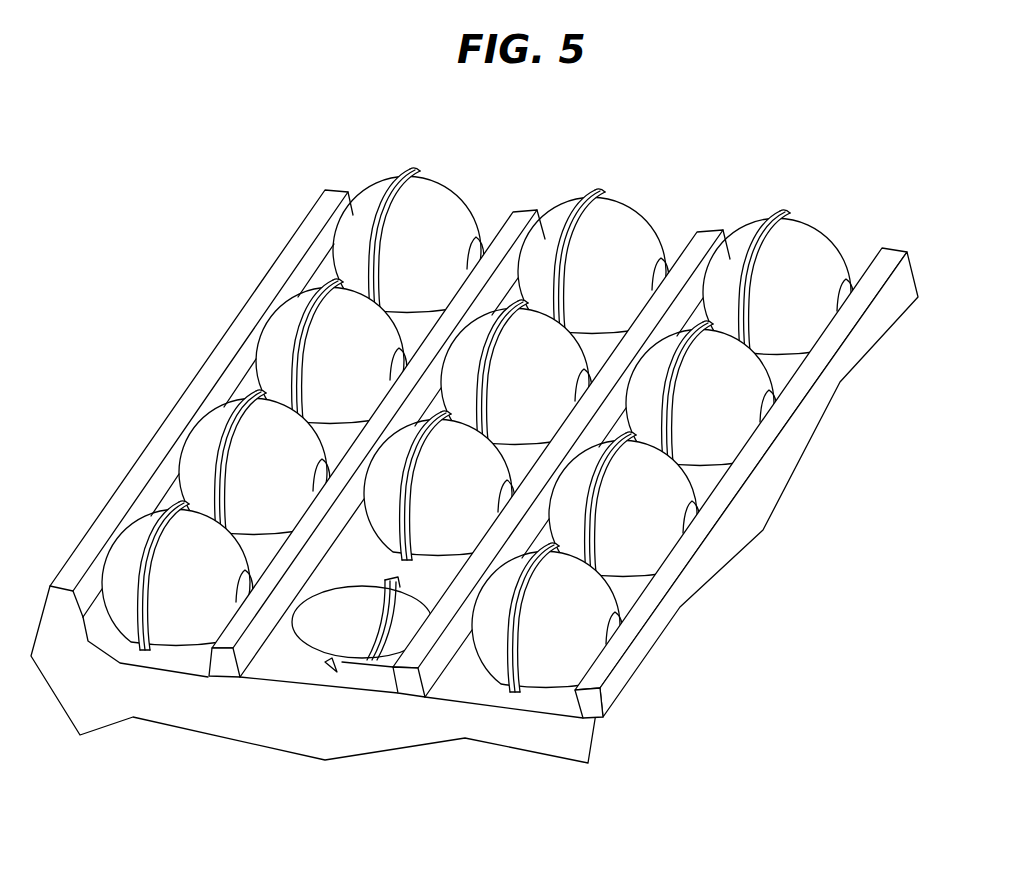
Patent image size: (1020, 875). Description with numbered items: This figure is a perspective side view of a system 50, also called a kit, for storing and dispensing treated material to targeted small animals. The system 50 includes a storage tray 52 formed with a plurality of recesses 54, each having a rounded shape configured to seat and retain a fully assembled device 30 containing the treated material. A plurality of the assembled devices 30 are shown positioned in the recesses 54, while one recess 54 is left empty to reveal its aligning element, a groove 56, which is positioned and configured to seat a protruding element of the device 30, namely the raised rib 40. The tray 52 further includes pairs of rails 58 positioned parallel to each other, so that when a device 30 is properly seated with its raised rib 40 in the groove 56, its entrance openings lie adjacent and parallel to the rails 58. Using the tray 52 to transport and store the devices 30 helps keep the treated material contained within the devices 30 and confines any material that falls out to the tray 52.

The device 30 is at (447, 445).
The raised rib 40 is at (397, 490).
The system 50 is at (307, 104).
The storage tray 52 is at (280, 215).
The recess 54 is at (312, 647).
The groove 56 is at (385, 636).
The rail 58 is at (703, 240).